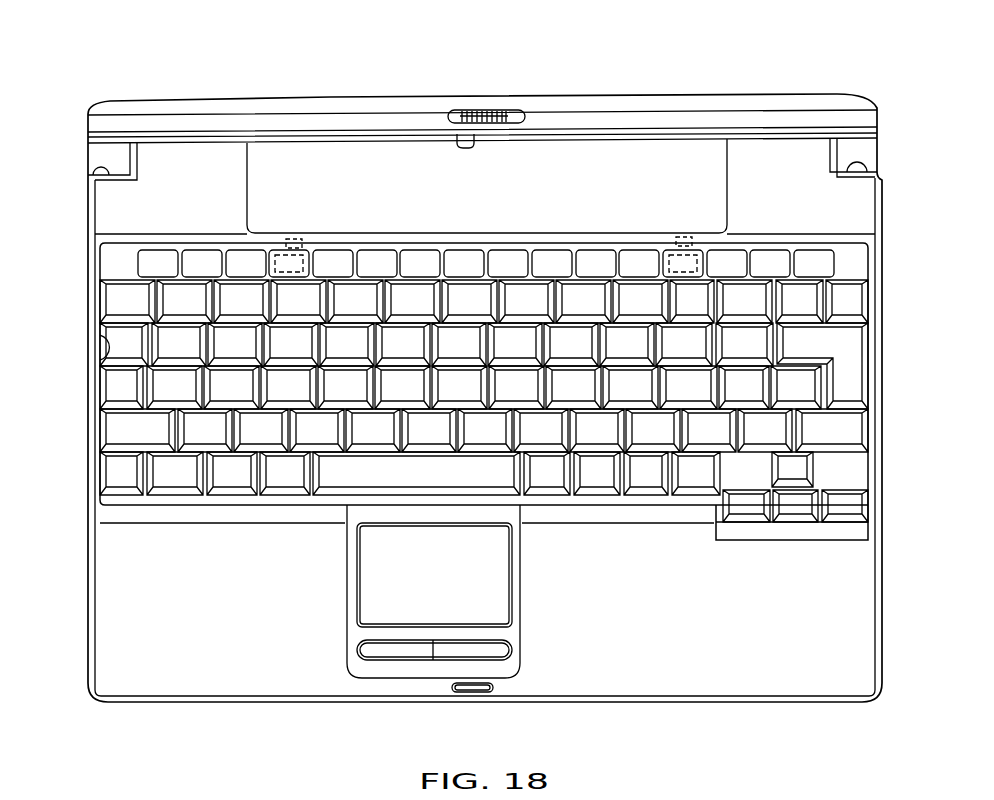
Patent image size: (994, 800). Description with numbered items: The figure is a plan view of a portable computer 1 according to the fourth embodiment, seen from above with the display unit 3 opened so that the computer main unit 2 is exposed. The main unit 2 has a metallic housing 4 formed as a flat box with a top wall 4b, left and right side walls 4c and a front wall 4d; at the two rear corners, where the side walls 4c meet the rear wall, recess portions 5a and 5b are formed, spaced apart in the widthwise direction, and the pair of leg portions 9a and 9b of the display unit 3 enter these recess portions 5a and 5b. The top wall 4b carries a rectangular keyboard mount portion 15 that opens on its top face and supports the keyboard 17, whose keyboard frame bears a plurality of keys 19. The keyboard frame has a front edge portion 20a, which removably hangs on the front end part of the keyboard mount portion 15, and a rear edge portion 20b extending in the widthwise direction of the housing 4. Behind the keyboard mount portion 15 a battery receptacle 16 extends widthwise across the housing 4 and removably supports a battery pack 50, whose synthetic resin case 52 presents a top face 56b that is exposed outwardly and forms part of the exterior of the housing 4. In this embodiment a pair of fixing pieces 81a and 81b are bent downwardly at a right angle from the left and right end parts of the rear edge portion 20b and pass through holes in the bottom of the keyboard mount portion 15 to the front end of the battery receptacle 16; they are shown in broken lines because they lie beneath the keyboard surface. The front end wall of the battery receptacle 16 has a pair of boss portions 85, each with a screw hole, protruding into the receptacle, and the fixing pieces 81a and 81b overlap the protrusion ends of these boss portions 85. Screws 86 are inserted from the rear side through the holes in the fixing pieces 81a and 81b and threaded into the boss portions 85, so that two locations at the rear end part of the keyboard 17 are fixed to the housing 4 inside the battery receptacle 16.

The portable computer 1 is at (60, 80).
The computer main unit 2 is at (224, 714).
The display unit 3 is at (306, 90).
The housing 4 is at (797, 703).
The top wall 4b is at (786, 155).
The side wall 4c is at (88, 633).
The front wall 4d is at (625, 703).
The recess portion 5a is at (92, 170).
The recess portion 5b is at (872, 173).
The leg portion 9a is at (95, 151).
The leg portion 9b is at (858, 141).
The keyboard mount portion 15 is at (110, 348).
The battery receptacle 16 is at (255, 158).
The keyboard 17 is at (286, 487).
The keys 19 is at (676, 378).
The front edge portion 20a is at (172, 505).
The rear edge portion 20b is at (128, 237).
The battery pack 50 is at (541, 156).
The case 52 is at (487, 172).
The top face 56b is at (404, 160).
The fixing piece 81a is at (310, 242).
The fixing piece 81b is at (667, 240).
The boss portion 85 is at (268, 260).
The screw 86 is at (291, 240).